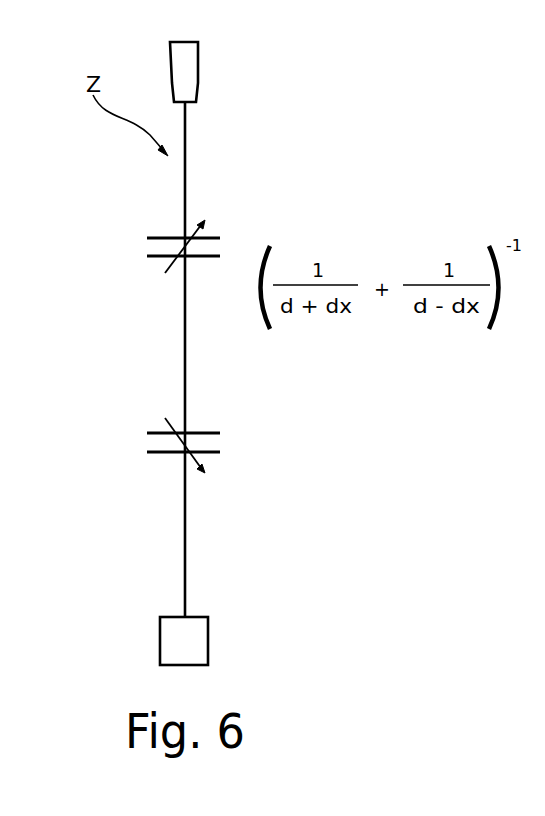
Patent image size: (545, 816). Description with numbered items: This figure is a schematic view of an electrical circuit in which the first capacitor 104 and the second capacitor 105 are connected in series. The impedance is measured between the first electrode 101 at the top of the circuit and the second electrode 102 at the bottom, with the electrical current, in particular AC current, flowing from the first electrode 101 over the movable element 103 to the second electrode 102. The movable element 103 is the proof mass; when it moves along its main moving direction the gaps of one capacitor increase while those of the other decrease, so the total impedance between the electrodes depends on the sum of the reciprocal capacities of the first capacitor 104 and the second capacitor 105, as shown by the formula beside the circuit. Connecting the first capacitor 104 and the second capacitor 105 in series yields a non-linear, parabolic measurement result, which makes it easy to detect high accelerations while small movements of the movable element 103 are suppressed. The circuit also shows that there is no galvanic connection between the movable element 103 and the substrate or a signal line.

The first electrode 101 is at (190, 81).
The second electrode 102 is at (190, 645).
The movable element 103 is at (185, 367).
The first capacitor 104 is at (157, 237).
The second capacitor 105 is at (157, 453).